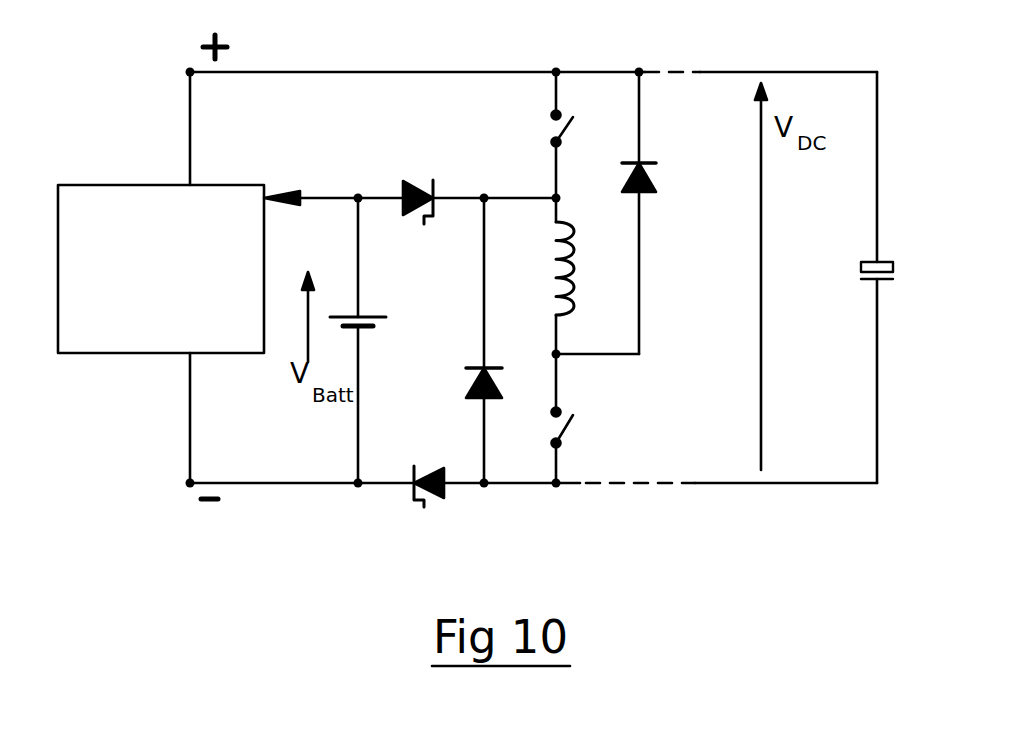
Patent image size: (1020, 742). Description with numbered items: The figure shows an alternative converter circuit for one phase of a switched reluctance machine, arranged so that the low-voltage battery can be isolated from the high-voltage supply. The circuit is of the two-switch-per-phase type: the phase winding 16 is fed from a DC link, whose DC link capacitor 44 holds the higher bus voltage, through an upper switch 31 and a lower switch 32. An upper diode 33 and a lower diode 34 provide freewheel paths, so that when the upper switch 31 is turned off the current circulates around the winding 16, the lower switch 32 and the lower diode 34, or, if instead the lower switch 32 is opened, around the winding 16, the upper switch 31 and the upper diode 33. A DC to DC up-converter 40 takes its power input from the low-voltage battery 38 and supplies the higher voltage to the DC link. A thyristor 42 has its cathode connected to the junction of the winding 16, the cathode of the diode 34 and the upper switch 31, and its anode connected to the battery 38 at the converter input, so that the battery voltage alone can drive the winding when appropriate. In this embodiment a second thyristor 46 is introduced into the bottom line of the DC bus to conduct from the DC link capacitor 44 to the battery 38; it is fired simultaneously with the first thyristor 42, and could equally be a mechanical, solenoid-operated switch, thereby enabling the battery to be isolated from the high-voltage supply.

The winding 16 is at (576, 247).
The upper switch 31 is at (553, 129).
The lower switch 32 is at (575, 427).
The upper diode 33 is at (660, 173).
The lower diode 34 is at (468, 379).
The low-voltage battery 38 is at (389, 320).
The DC to DC up-converter 40 is at (187, 325).
The thyristor 42 is at (426, 180).
The DC link capacitor 44 is at (852, 271).
The second thyristor 46 is at (410, 492).